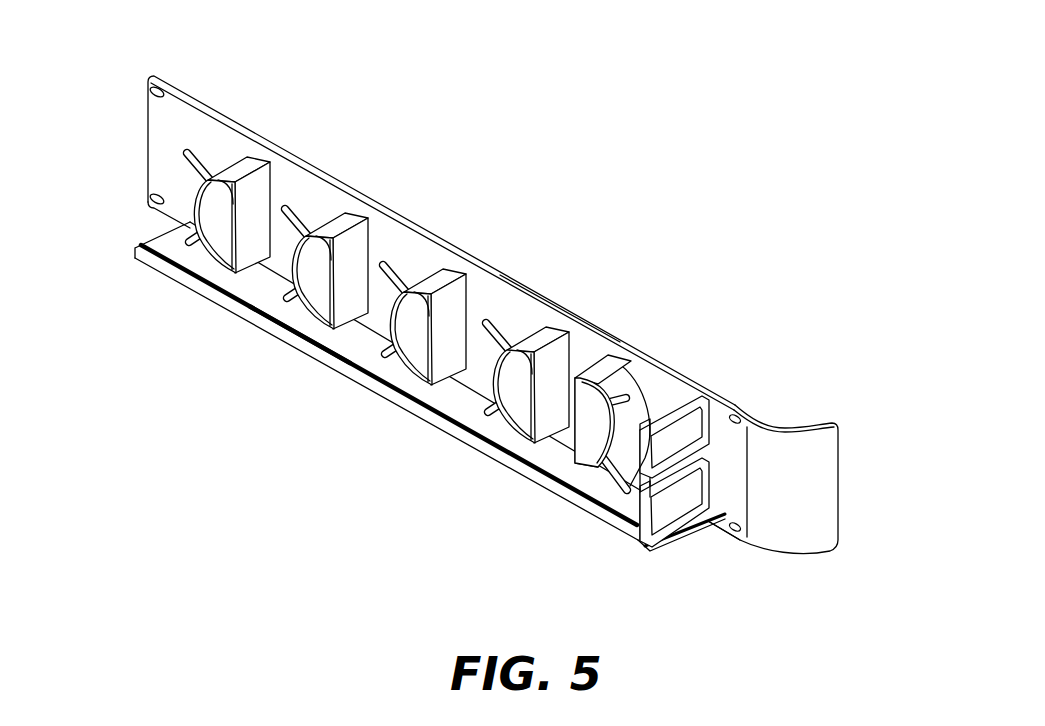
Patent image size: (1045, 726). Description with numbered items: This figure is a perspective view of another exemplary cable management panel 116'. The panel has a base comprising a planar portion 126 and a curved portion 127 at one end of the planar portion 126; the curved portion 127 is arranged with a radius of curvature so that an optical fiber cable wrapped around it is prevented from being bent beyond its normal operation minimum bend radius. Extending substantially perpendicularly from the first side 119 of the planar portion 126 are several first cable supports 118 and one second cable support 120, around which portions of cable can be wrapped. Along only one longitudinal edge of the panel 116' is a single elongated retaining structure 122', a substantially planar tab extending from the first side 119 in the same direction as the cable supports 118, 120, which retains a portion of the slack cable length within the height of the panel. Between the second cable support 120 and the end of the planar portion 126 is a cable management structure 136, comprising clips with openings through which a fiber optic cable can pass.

The cable management panel 116' is at (751, 154).
The first cable support 118 is at (447, 277).
The first side 119 is at (166, 156).
The second cable support 120 is at (606, 378).
The single elongated retaining structure 122' is at (430, 386).
The planar portion 126 is at (247, 131).
The curved portion 127 is at (791, 540).
The cable management structure 136 is at (716, 390).